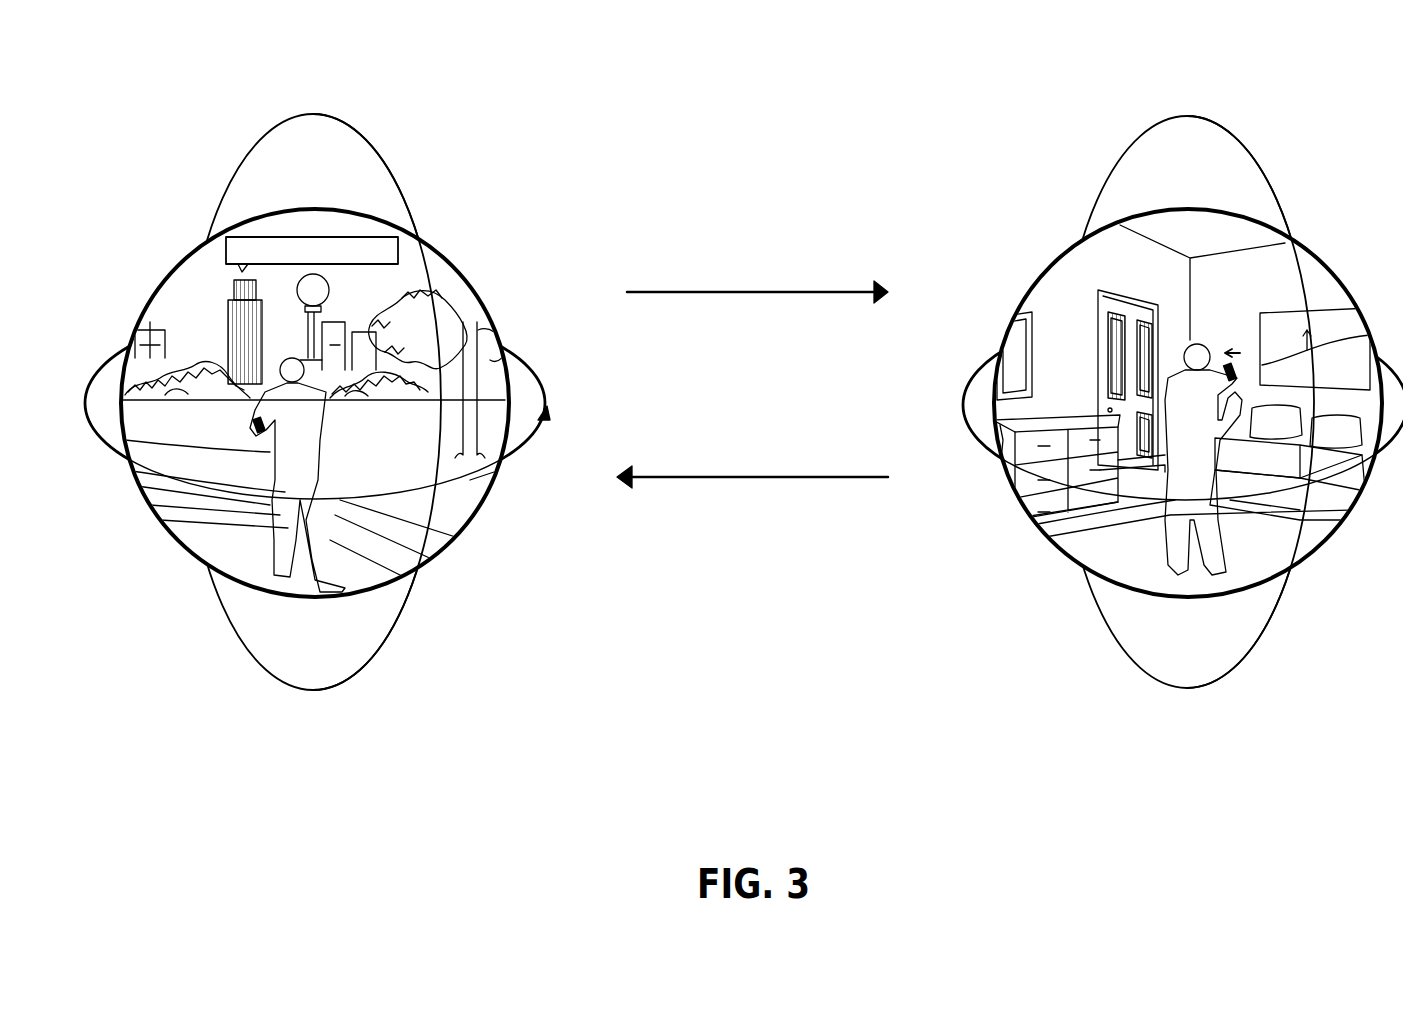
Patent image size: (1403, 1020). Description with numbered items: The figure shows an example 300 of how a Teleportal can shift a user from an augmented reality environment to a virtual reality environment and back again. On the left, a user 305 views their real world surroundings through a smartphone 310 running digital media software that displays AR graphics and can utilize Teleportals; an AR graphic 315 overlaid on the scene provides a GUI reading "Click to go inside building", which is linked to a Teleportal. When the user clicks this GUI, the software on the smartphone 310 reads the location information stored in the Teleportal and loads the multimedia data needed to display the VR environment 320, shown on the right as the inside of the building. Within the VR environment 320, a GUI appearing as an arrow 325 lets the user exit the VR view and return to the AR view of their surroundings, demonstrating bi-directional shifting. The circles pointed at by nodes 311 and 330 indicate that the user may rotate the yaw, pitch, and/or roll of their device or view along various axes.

The example 300 is at (180, 65).
The user 305 is at (285, 437).
The smartphone 310 is at (245, 380).
The node 311 is at (198, 598).
The AR graphic 315 is at (290, 228).
The VR environment 320 is at (1062, 286).
The arrow 325 is at (1240, 328).
The node 330 is at (1078, 620).